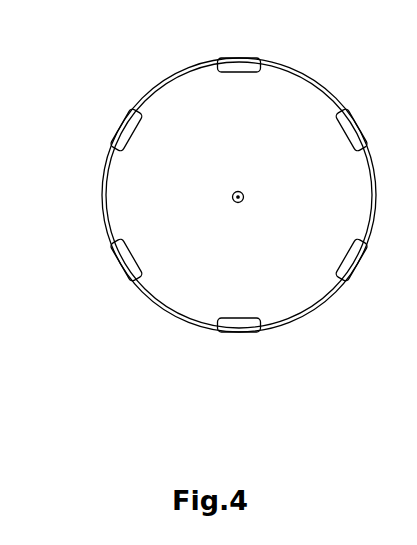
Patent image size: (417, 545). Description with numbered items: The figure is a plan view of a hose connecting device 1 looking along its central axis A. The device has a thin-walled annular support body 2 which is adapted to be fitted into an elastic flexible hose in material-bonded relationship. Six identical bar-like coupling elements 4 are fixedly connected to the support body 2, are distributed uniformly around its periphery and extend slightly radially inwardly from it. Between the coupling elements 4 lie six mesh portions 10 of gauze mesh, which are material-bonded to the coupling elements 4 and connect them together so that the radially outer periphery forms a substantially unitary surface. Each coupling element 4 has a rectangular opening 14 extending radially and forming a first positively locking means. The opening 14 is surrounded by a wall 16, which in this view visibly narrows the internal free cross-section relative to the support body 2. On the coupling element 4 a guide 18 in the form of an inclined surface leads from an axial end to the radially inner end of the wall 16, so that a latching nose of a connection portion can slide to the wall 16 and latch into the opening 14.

The hose connecting device 1 is at (234, 223).
The annular support body 2 is at (184, 337).
The coupling element 4 is at (231, 242).
The gauze mesh portion 10 is at (140, 88).
The opening 14 is at (146, 150).
The wall 16 is at (146, 126).
The guide 18 is at (113, 136).
The central axis A is at (246, 220).